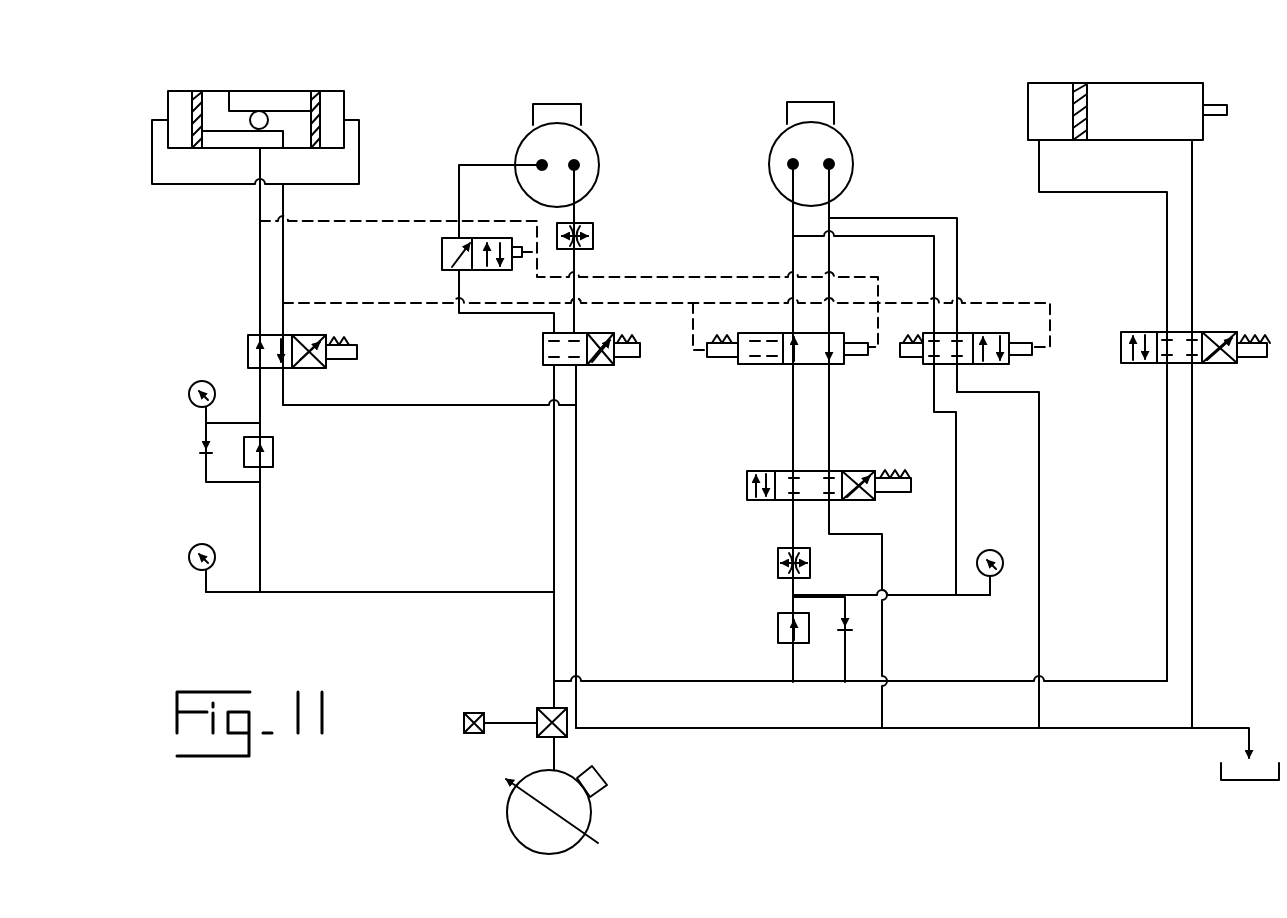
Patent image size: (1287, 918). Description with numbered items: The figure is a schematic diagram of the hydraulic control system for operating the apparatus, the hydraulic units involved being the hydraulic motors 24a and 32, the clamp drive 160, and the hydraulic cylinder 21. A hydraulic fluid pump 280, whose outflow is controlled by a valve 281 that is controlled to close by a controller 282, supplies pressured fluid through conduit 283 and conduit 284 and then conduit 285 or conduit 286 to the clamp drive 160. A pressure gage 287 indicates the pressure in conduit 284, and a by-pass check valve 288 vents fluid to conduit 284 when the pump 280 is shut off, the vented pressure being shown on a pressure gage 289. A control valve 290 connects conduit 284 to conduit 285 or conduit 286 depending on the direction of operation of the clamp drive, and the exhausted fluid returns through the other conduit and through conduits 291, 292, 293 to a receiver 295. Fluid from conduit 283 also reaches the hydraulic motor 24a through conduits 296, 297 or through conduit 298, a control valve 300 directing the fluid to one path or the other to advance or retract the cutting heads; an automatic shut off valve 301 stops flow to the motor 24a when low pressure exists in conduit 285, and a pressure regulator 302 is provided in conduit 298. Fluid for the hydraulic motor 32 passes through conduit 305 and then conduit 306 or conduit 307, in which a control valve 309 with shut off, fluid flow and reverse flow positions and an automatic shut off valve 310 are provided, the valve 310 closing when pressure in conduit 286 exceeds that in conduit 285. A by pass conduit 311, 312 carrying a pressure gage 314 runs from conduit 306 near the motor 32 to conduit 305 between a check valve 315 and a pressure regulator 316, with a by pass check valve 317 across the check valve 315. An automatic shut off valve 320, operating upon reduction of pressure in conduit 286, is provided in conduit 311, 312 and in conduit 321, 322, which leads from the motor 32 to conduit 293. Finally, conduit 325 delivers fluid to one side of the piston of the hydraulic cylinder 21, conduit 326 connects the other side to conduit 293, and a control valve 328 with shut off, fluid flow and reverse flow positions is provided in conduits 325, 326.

The clamp drive 160 is at (257, 92).
The hydraulic cylinder 21 is at (1110, 83).
The hydraulic motor 24a is at (598, 151).
The hydraulic motor 32 is at (852, 150).
The hydraulic fluid pump 280 is at (592, 815).
The valve 281 is at (545, 708).
The controller 282 is at (464, 720).
The conduit 283 is at (554, 630).
The conduit 284 is at (310, 592).
The conduit 285 is at (260, 285).
The conduit 286 is at (283, 255).
The pressure gage 287 is at (189, 558).
The by-pass check valve 288 is at (206, 453).
The pressure gage 289 is at (189, 394).
The control valve 290 is at (248, 348).
The conduit 291 is at (440, 405).
The conduit 292 is at (577, 478).
The conduit 293 is at (932, 728).
The receiver 295 is at (1221, 772).
The conduit 296 is at (478, 318).
The conduit 297 is at (459, 197).
The conduit 298 is at (578, 270).
The control valve 300 is at (600, 366).
The automatic shut off valve 301 is at (442, 255).
The pressure regulator 302 is at (593, 236).
The conduit 305 is at (705, 681).
The conduit 306 is at (793, 428).
The conduit 307 is at (829, 418).
The control valve 309 is at (747, 486).
The automatic shut off valve 310 is at (764, 365).
The by pass conduit 311 is at (934, 258).
The by pass conduit 312 is at (956, 565).
The pressure gage 314 is at (998, 545).
The check valve 315 is at (778, 630).
The pressure regulator 316 is at (778, 563).
The by pass check valve 317 is at (840, 625).
The automatic shut off valve 320 is at (1000, 364).
The conduit 321 is at (957, 250).
The conduit 322 is at (1039, 495).
The conduit 325 is at (1167, 235).
The conduit 326 is at (1192, 235).
The control valve 328 is at (1208, 364).